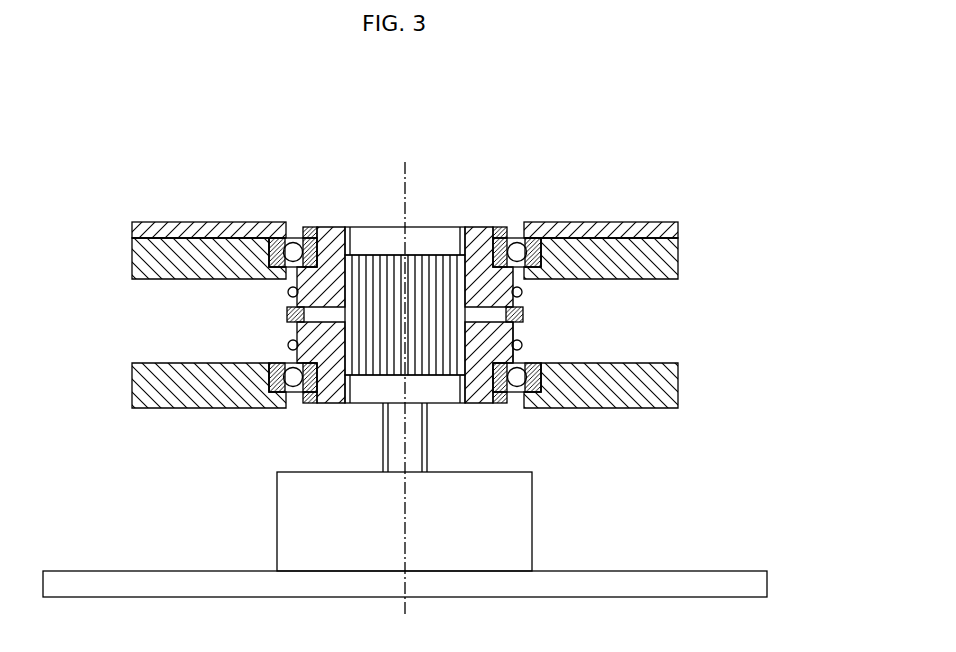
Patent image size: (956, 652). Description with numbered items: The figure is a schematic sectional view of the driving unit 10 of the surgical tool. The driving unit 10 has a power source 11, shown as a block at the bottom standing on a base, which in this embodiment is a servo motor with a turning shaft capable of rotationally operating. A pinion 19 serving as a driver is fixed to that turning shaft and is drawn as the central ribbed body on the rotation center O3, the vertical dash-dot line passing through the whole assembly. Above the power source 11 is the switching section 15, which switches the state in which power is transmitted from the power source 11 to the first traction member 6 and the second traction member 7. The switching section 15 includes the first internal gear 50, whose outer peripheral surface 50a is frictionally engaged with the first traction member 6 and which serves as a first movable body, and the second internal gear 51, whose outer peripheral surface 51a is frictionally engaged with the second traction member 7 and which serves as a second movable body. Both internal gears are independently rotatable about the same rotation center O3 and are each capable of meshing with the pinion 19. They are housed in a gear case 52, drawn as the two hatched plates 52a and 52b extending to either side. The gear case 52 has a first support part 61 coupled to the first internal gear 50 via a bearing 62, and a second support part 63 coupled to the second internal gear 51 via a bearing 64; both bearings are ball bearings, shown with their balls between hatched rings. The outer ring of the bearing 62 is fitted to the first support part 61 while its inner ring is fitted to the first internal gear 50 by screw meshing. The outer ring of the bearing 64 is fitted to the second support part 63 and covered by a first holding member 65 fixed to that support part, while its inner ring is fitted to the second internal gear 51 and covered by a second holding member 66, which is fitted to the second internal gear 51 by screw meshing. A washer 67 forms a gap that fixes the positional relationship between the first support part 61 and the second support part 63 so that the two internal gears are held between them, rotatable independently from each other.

The driving unit 10 is at (637, 155).
The switching section 15 is at (540, 447).
The power source 11 is at (532, 512).
The pinion 19 is at (437, 375).
The second internal gear 51 is at (470, 242).
The outer peripheral surface of the second internal gear 51a is at (513, 280).
The second holding member 66 is at (498, 228).
The bearing 64 is at (421, 213).
The second support part 63 is at (540, 270).
The first holding member 65 is at (577, 223).
The gear case 52 is at (470, 333).
The upper plate 52b is at (680, 257).
The lower plate 52a is at (635, 400).
The second traction member 7 is at (521, 293).
The washer 67 is at (284, 315).
The first traction member 6 is at (521, 345).
The first internal gear 50 is at (497, 335).
The outer peripheral surface of the first internal gear 50a is at (513, 355).
The first support part 61 is at (405, 409).
The bearing 62 is at (316, 390).
The rotation center O3 is at (407, 162).